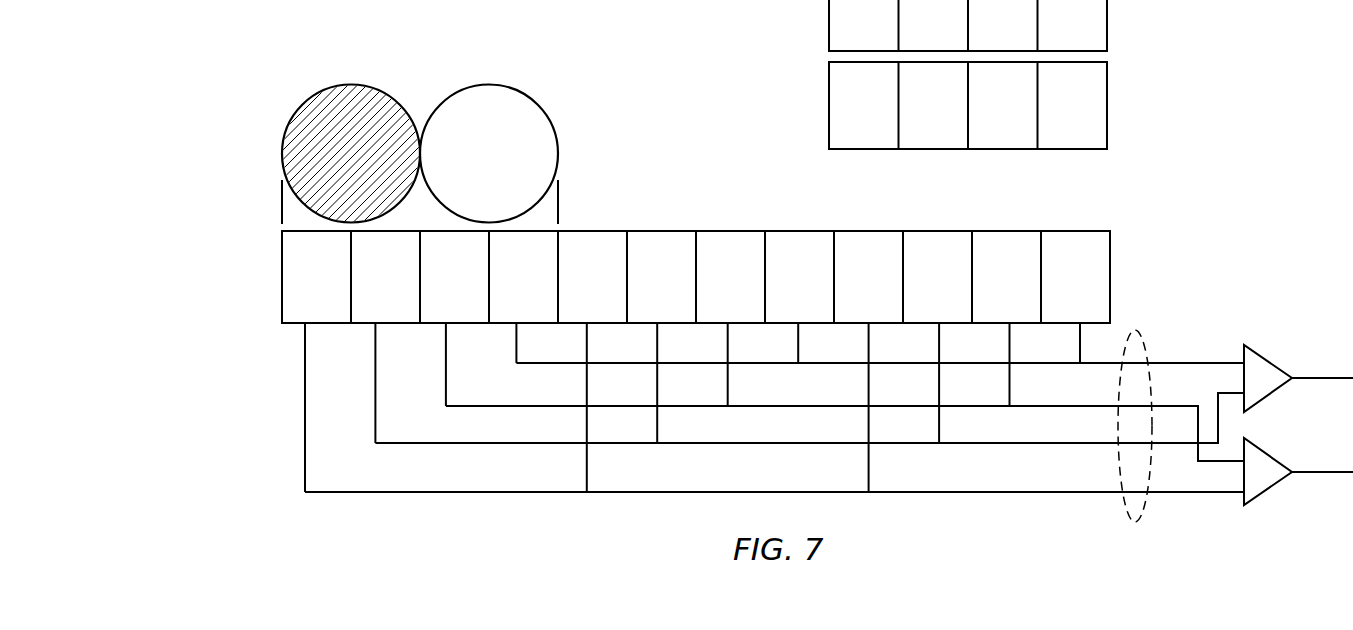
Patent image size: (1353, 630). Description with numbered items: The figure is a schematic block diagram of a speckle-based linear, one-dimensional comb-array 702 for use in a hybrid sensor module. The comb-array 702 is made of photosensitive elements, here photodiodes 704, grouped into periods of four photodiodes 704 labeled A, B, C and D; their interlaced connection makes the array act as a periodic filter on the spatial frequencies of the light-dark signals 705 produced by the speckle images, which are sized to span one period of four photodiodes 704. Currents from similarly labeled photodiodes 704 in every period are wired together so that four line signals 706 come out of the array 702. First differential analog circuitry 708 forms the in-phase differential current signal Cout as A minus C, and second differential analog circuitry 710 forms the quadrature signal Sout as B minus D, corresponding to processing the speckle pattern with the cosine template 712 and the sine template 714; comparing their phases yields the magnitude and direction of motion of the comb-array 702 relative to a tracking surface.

The 1D comb-array 702 is at (739, 254).
The photodiodes 704 is at (1072, 231).
The light-dark signals 705 is at (580, 152).
The line signals 706 is at (1128, 335).
The first differential analog circuitry 708 is at (1261, 493).
The second differential analog circuitry 710 is at (1258, 354).
The cosine template 712 is at (735, 7).
The sine template 714 is at (735, 97).